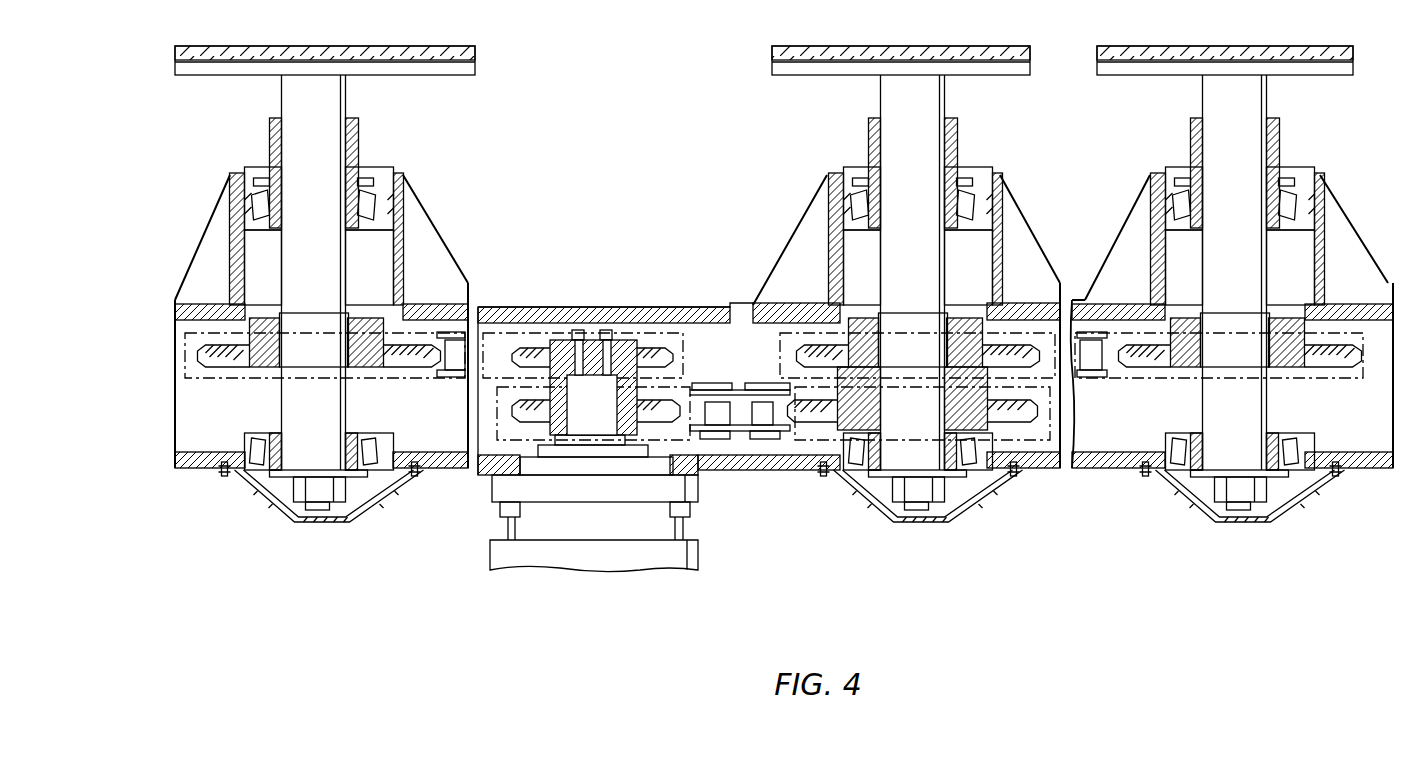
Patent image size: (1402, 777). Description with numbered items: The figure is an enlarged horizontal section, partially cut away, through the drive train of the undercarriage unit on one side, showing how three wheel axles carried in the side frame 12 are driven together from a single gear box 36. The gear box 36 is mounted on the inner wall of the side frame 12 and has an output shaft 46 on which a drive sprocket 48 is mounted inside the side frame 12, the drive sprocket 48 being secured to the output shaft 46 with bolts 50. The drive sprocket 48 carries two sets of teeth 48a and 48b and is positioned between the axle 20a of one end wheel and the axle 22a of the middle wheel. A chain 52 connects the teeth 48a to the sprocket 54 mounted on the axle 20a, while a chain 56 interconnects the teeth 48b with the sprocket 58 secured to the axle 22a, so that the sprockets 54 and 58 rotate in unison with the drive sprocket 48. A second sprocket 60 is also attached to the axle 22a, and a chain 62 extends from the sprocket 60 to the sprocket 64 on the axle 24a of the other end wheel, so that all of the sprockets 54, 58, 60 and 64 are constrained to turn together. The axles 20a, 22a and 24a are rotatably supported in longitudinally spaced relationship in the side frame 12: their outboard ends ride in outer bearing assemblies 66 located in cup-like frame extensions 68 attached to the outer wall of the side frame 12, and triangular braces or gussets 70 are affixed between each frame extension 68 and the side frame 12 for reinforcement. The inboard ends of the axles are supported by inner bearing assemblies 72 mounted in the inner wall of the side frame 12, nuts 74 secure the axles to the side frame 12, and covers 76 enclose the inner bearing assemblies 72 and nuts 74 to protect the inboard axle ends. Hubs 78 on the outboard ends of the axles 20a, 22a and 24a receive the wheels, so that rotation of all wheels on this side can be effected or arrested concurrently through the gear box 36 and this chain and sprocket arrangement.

The side frame 12 is at (712, 468).
The axle 20a is at (335, 241).
The axle 22a is at (934, 241).
The axle 24a is at (1256, 241).
The gear box 36 is at (575, 553).
The output shaft 46 is at (604, 414).
The drive sprocket 48 is at (576, 343).
The teeth 48a is at (626, 349).
The teeth 48b is at (515, 408).
The bolts 50 is at (606, 330).
The chain 52 is at (468, 290).
The sprocket 54 is at (263, 362).
The chain 56 is at (740, 432).
The sprocket 58 is at (830, 418).
The second sprocket 60 is at (1000, 350).
The chain 62 is at (1095, 290).
The sprocket 64 is at (1305, 360).
The outer bearing assemblies 66 is at (270, 212).
The frame extensions 68 is at (400, 263).
The gussets 70 is at (218, 250).
The inner bearing assemblies 72 is at (368, 455).
The nuts 74 is at (315, 490).
The covers 76 is at (325, 522).
The hubs 78 is at (393, 68).